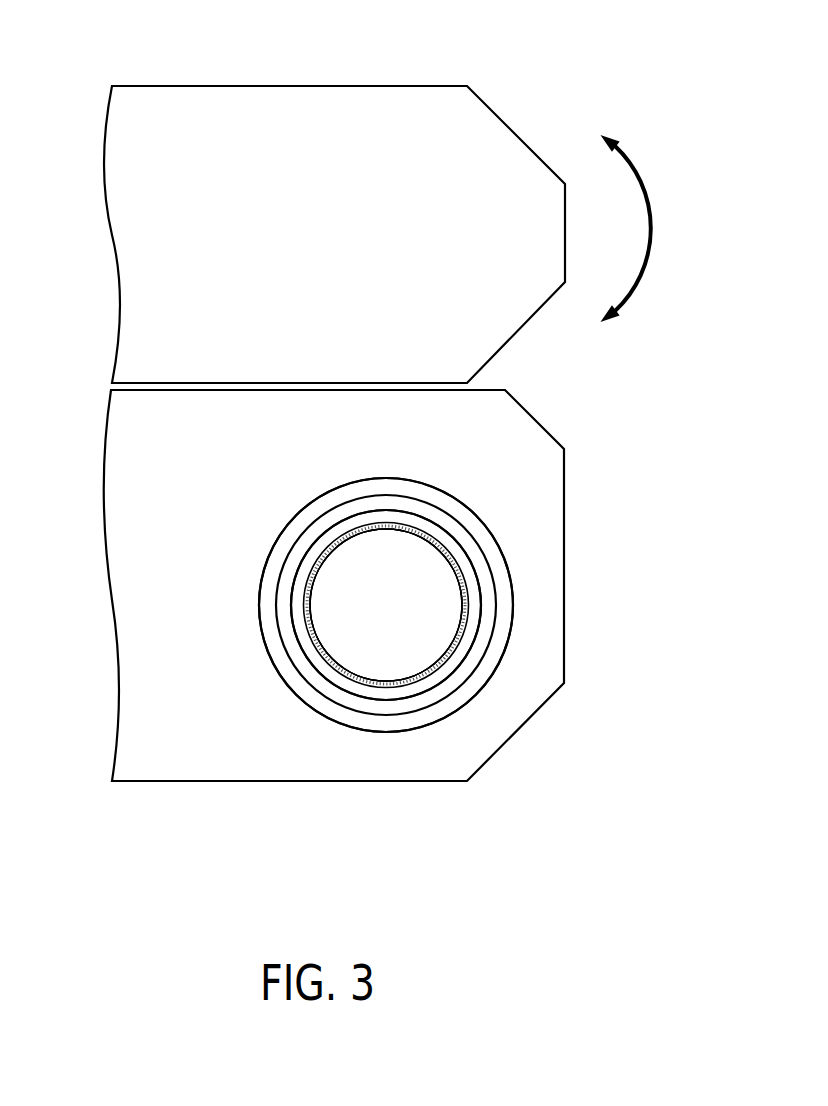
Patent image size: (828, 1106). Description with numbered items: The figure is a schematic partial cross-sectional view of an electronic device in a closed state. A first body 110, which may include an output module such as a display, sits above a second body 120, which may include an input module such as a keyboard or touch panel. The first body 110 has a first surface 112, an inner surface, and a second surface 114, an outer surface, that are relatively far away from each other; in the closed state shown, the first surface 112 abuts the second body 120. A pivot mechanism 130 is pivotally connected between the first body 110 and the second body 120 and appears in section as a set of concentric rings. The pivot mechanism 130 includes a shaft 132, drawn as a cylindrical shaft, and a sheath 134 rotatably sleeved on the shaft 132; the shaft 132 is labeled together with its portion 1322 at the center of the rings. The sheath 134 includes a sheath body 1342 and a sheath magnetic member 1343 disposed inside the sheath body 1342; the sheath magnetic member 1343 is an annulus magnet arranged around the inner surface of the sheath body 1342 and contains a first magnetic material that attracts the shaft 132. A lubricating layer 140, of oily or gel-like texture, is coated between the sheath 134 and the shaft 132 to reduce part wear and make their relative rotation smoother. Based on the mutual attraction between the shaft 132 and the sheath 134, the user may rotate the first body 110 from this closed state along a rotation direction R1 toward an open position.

The first body 110 is at (478, 120).
The second surface 114 is at (202, 85).
The first surface 112 is at (155, 384).
The rotation direction R1 is at (651, 228).
The second body 120 is at (226, 748).
The pivot mechanism 130 is at (620, 657).
The shaft 132 is at (386, 605).
The opening of hole 1322 is at (415, 647).
The sheath 134 is at (658, 515).
The sheath body 1342 is at (497, 552).
The sheath magnetic member 1343 is at (492, 600).
The lubricating layer 140 is at (304, 604).